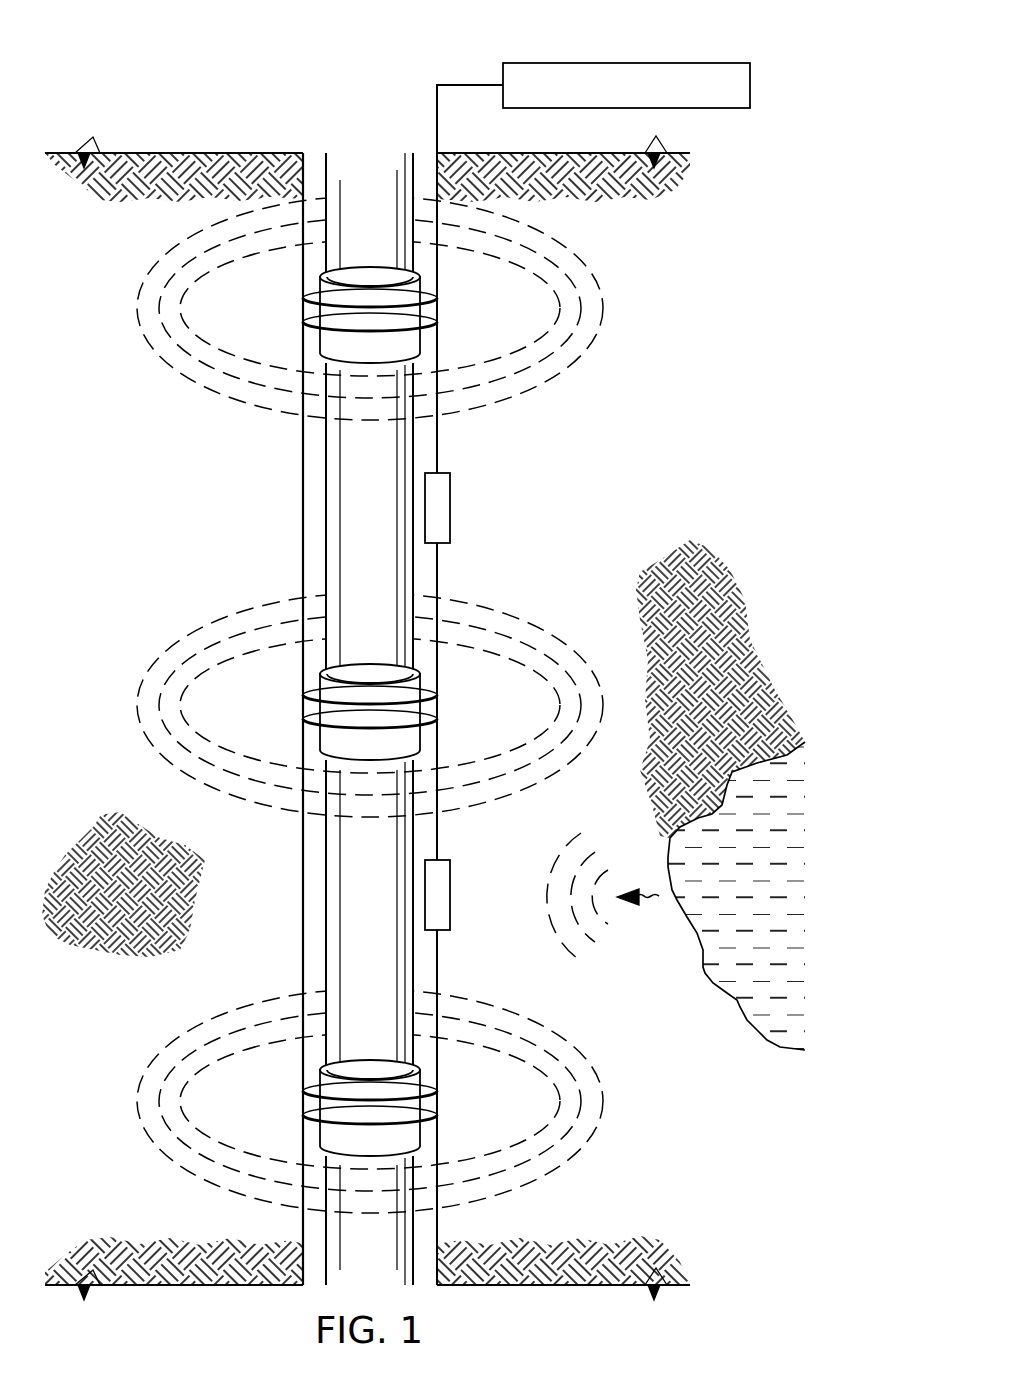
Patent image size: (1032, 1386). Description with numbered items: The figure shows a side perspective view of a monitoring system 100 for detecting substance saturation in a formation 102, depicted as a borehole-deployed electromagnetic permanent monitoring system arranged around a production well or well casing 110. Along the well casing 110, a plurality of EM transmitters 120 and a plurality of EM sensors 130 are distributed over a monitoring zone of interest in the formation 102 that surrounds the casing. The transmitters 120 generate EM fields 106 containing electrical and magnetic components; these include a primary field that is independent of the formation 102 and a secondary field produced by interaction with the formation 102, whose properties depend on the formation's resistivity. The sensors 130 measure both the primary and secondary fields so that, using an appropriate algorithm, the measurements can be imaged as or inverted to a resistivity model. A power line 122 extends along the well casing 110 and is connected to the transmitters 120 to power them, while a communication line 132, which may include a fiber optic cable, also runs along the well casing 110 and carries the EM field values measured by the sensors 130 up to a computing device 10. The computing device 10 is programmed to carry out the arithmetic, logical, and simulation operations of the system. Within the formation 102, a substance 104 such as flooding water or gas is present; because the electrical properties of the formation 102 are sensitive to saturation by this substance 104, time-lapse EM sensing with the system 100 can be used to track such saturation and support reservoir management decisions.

The monitoring system 100 is at (216, 73).
The computing device 10 is at (625, 63).
The formation 102 is at (691, 456).
The substance 104 is at (742, 1008).
The EM fields 106 is at (136, 302).
The well casing 110 is at (393, 924).
The EM transmitters 120 is at (303, 293).
The power line 122 is at (302, 508).
The EM sensors 130 is at (452, 509).
The communication line 132 is at (438, 454).